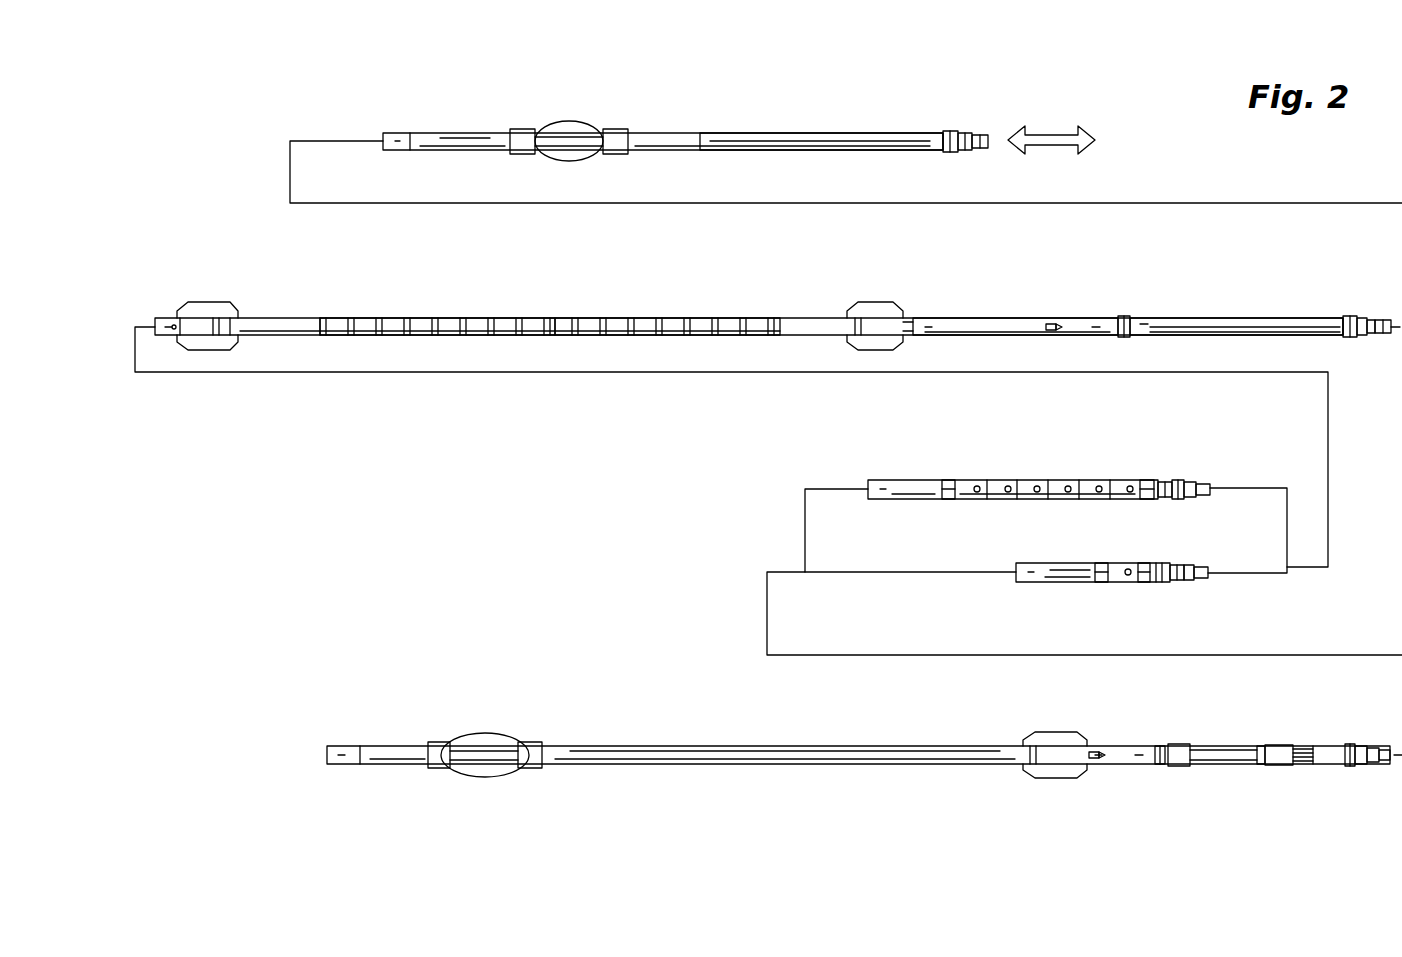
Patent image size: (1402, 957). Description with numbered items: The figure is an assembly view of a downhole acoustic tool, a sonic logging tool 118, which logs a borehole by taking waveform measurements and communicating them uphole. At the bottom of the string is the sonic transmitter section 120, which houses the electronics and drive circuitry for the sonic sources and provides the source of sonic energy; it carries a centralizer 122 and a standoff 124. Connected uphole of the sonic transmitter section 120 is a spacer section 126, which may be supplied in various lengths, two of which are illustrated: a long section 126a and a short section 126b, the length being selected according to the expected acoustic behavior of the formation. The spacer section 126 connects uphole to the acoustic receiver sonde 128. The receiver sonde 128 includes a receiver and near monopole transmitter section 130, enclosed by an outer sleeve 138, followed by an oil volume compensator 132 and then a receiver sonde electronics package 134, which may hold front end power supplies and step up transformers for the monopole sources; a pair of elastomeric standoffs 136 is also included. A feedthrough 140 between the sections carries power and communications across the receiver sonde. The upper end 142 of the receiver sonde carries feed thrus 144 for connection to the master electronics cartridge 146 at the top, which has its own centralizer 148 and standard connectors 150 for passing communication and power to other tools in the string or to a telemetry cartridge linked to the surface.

The sonic logging tool 118 is at (437, 97).
The master electronics cartridge 146 is at (792, 135).
The centralizer 148 is at (557, 121).
The standard connectors 150 is at (972, 131).
The acoustic receiver sonde 128 is at (350, 280).
The receiver and near monopole transmitter section 130 is at (473, 315).
The outer sleeve 138 is at (665, 315).
The elastomeric standoffs 136 is at (208, 302).
The oil volume compensator 132 is at (960, 315).
The feedthrough 140 is at (1125, 315).
The receiver sonde electronics package 134 is at (1240, 315).
The upper end 142 is at (1366, 302).
The feed thrus 144 is at (1388, 315).
The spacer section 126 is at (955, 458).
The long section 126a is at (907, 502).
The short section 126b is at (1053, 590).
The sonic transmitter section 120 is at (684, 779).
The centralizer 122 is at (467, 777).
The standoff 124 is at (1045, 778).